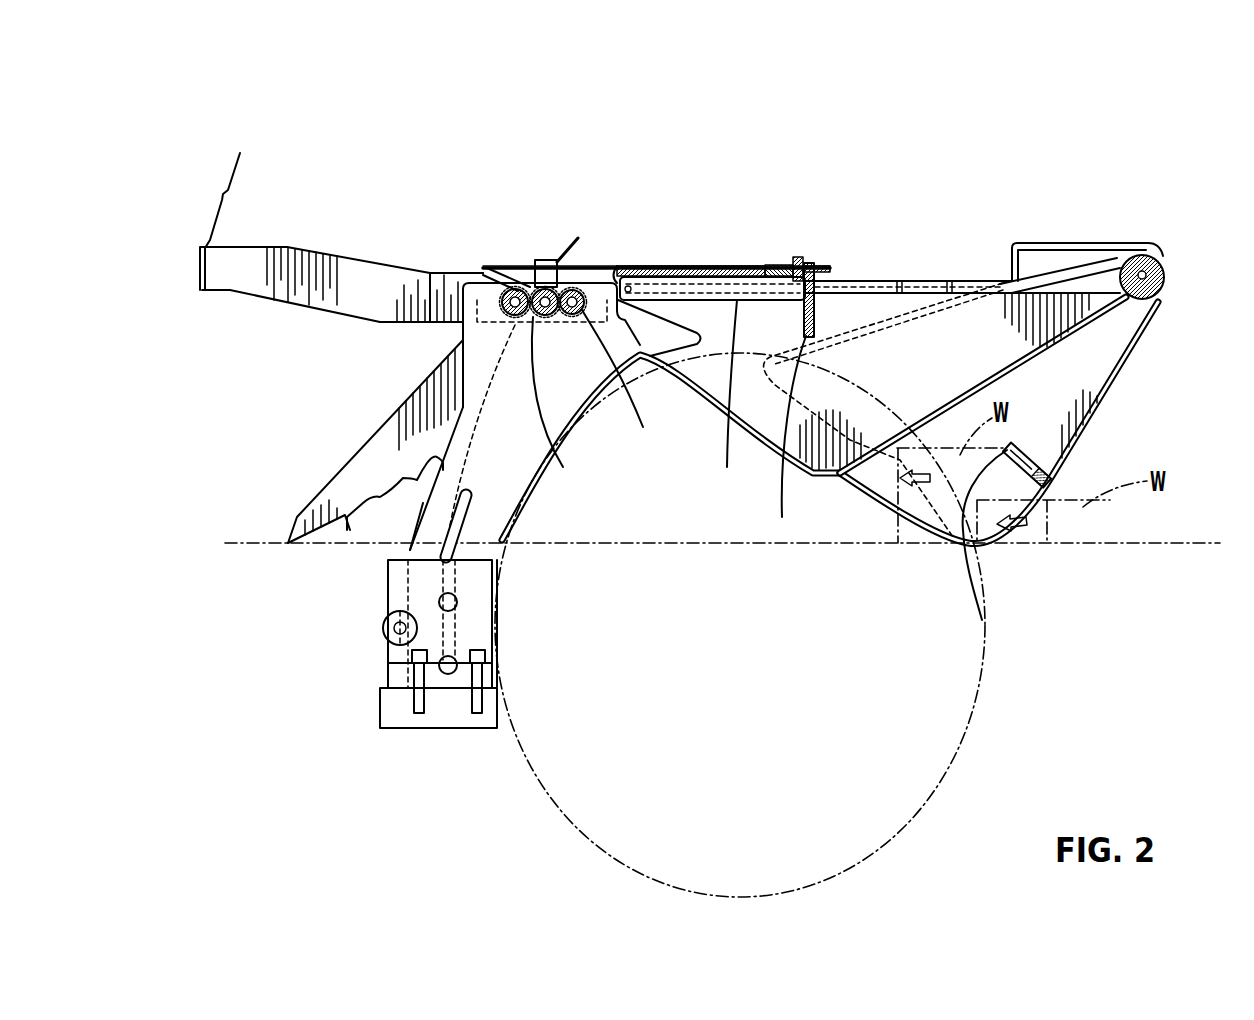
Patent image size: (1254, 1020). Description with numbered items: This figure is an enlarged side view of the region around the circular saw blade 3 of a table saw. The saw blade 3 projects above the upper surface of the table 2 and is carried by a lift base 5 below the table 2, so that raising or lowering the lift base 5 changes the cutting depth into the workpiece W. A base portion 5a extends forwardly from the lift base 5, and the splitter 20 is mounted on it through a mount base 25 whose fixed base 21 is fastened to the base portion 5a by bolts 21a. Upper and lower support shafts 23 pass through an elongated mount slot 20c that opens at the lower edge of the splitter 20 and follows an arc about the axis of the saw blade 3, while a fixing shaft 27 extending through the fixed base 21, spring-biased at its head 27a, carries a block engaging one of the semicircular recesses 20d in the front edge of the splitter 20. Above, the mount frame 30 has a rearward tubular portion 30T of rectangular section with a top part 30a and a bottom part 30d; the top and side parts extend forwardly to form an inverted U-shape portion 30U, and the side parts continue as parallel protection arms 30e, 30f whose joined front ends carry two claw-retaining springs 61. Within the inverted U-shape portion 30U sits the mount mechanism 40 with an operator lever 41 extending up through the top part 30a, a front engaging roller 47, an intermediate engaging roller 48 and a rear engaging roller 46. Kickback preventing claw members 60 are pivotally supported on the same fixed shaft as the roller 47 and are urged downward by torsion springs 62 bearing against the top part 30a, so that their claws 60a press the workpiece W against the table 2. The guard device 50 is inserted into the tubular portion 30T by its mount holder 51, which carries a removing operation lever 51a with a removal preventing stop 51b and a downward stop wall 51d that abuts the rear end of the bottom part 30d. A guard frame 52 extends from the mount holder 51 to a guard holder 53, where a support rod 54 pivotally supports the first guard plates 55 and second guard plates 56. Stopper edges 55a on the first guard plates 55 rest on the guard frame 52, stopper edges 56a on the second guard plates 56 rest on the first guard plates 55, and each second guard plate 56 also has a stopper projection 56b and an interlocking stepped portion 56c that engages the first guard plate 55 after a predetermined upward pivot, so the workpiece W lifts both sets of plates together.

The table 2 is at (1135, 543).
The circular saw blade 3 is at (912, 710).
The lift base 5 is at (398, 706).
The base portion 5a is at (436, 747).
The splitter 20 is at (515, 408).
The mount slot 20c is at (418, 548).
The semicircular recesses 20d is at (420, 509).
The fixed base 21 is at (398, 577).
The bolts 21a is at (412, 652).
The support shafts 23 is at (457, 602).
The mount base 25 is at (375, 604).
The fixing shaft 27 is at (381, 627).
The head of fixing shaft 27a is at (331, 657).
The mount frame 30 is at (619, 258).
The inverted U-shape portion 30U is at (592, 258).
The top part 30a is at (680, 265).
The tubular portion 30T is at (722, 254).
The bottom part 30d is at (671, 420).
The protection arm 30e is at (362, 243).
The protection arm 30f is at (327, 262).
The mount mechanism 40 is at (547, 330).
The lever 41 is at (538, 258).
The rear engaging roller 46 is at (612, 371).
The front engaging roller 47 is at (500, 296).
The intermediate engaging roller 48 is at (558, 393).
The guard device 50 is at (1040, 236).
The mount holder 51 is at (812, 263).
The removing operation lever 51a is at (796, 258).
The removal preventing stop 51b is at (753, 266).
The stop wall 51d is at (883, 411).
The guard frame 52 is at (1083, 292).
The guard holder 53 is at (1165, 266).
The support rod 54 is at (1144, 271).
The first guard plates 55 is at (995, 325).
The stopper edges 55a is at (919, 290).
The second guard plates 56 is at (1097, 373).
The stopper edges 56a is at (1073, 247).
The stopper projection 56b is at (1060, 483).
The interlocking stepped portion 56c is at (969, 612).
The kickback preventing claw members 60 is at (377, 463).
The claws 60a is at (330, 548).
The claw-retaining springs 61 is at (208, 223).
The torsion springs 62 is at (511, 287).